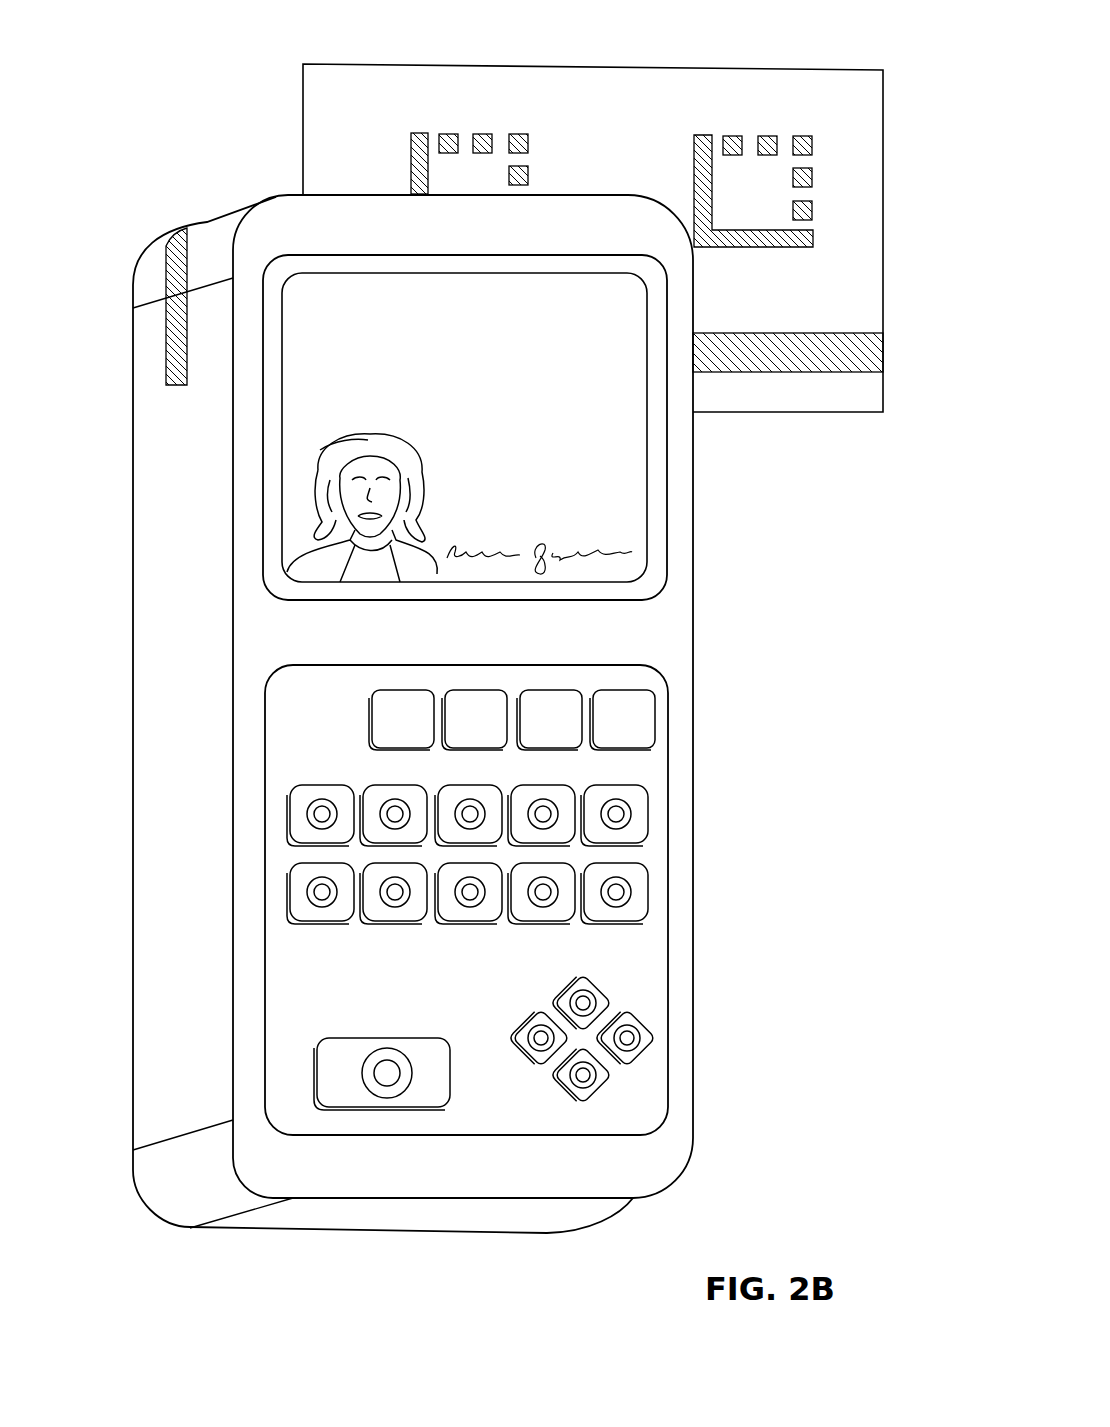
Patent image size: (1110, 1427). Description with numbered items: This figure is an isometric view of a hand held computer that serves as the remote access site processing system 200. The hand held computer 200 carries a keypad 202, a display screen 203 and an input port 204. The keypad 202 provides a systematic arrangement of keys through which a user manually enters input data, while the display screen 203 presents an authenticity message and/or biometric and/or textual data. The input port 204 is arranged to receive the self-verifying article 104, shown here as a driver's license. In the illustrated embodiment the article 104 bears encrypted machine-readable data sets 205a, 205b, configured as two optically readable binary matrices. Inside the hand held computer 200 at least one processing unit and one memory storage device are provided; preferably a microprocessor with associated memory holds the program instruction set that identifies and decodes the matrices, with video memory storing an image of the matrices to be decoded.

The self-verifying article 104 is at (778, 70).
The encrypted machine-readable data set 205a is at (687, 127).
The encrypted machine-readable data set 205b is at (718, 100).
The remote access site processing system 200 is at (132, 622).
The input port 204 is at (165, 255).
The display screen 203 is at (667, 507).
The keypad 202 is at (668, 785).